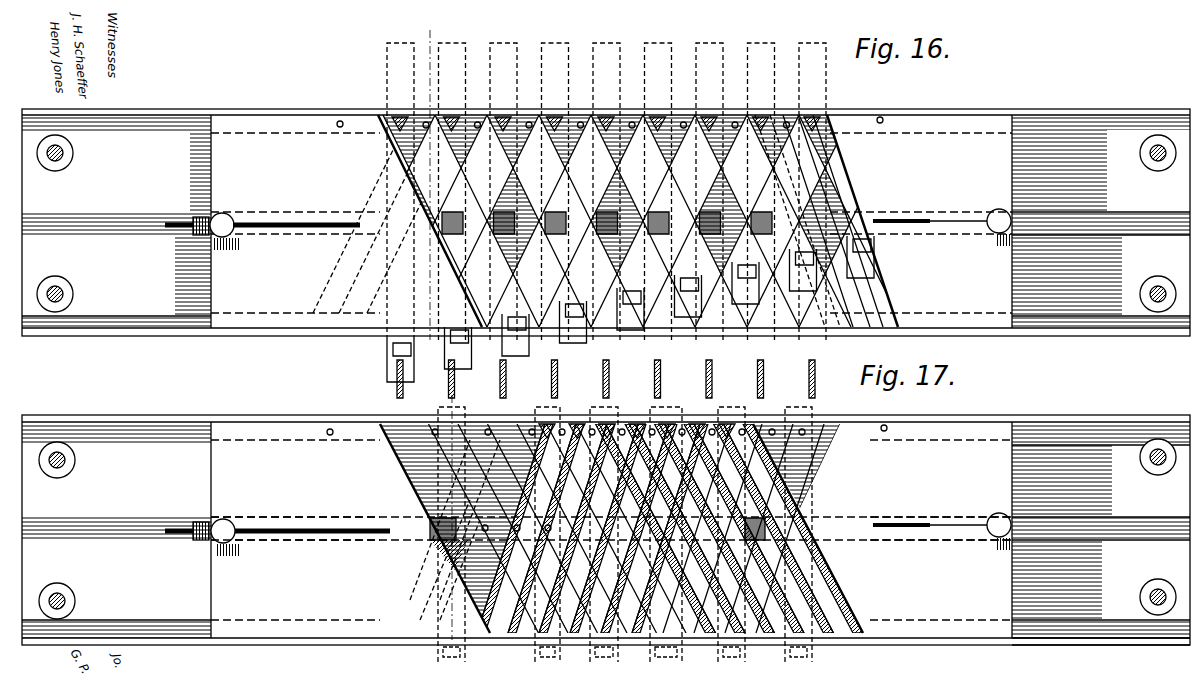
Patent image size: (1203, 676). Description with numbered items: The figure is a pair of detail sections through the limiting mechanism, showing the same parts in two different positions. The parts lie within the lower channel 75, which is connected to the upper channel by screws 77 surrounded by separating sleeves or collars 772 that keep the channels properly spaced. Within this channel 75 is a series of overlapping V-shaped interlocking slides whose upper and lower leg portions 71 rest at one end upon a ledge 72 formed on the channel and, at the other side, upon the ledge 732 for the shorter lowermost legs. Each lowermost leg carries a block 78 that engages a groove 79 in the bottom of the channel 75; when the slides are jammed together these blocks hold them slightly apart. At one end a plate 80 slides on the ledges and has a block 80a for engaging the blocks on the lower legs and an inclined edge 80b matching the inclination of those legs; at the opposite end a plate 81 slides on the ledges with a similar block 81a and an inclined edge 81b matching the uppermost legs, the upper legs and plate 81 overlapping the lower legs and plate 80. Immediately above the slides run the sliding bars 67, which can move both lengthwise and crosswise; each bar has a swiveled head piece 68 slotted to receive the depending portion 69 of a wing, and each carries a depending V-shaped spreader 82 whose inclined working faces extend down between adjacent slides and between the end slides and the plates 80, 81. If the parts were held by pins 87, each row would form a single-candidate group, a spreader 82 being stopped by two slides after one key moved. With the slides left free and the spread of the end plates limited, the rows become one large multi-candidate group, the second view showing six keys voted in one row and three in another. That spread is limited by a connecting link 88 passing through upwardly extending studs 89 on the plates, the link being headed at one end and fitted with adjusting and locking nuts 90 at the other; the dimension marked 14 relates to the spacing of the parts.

In FIG. 16, the dimension / spacing of strips 14 is at (440, 38).
In FIG. 17, the dimension / spacing of strips 14 is at (458, 410).
In FIG. 16, the sliding bar 67 is at (505, 55).
In FIG. 17, the sliding bar 67 is at (712, 410).
In FIG. 16, the head piece 68 is at (392, 354).
In FIG. 16, the depending portion 69 is at (505, 392).
In FIG. 16, the leg portion 71 is at (808, 182).
In FIG. 17, the leg portion 71 is at (621, 528).
In FIG. 17, the ledge 72 is at (1108, 425).
In FIG. 17, the ledge 732 is at (1125, 620).
In FIG. 16, the lower channel 75 is at (1092, 328).
In FIG. 17, the lower channel 75 is at (1048, 416).
In FIG. 16, the screw 77 is at (62, 160).
In FIG. 17, the screw 77 is at (62, 470).
In FIG. 16, the separating sleeve or collar 772 is at (55, 292).
In FIG. 17, the separating sleeve or collar 772 is at (57, 598).
In FIG. 16, the block 78 is at (718, 242).
In FIG. 17, the block 78 is at (611, 528).
In FIG. 16, the groove 79 is at (1082, 226).
In FIG. 17, the groove 79 is at (1135, 525).
In FIG. 16, the plate 80 is at (921, 223).
In FIG. 17, the plate 80 is at (941, 530).
In FIG. 16, the block 80a is at (822, 208).
In FIG. 17, the block 80a is at (820, 522).
In FIG. 16, the inclined edge 80b is at (760, 250).
In FIG. 17, the inclined edge 80b is at (832, 478).
In FIG. 16, the plate 81 is at (295, 223).
In FIG. 17, the plate 81 is at (380, 572).
In FIG. 16, the block 81a is at (330, 258).
In FIG. 17, the block 81a is at (372, 515).
In FIG. 16, the inclined edge 81b is at (392, 172).
In FIG. 17, the inclined edge 81b is at (435, 545).
In FIG. 16, the spreader 82 is at (402, 118).
In FIG. 17, the spreader 82 is at (607, 424).
In FIG. 16, the pin 87 is at (342, 121).
In FIG. 17, the pin 87 is at (342, 414).
In FIG. 16, the connecting link 88 is at (918, 215).
In FIG. 17, the connecting link 88 is at (932, 512).
In FIG. 16, the stud 89 is at (226, 222).
In FIG. 17, the stud 89 is at (228, 526).
In FIG. 16, the adjusting and locking nut 90 is at (205, 216).
In FIG. 17, the adjusting and locking nut 90 is at (209, 520).